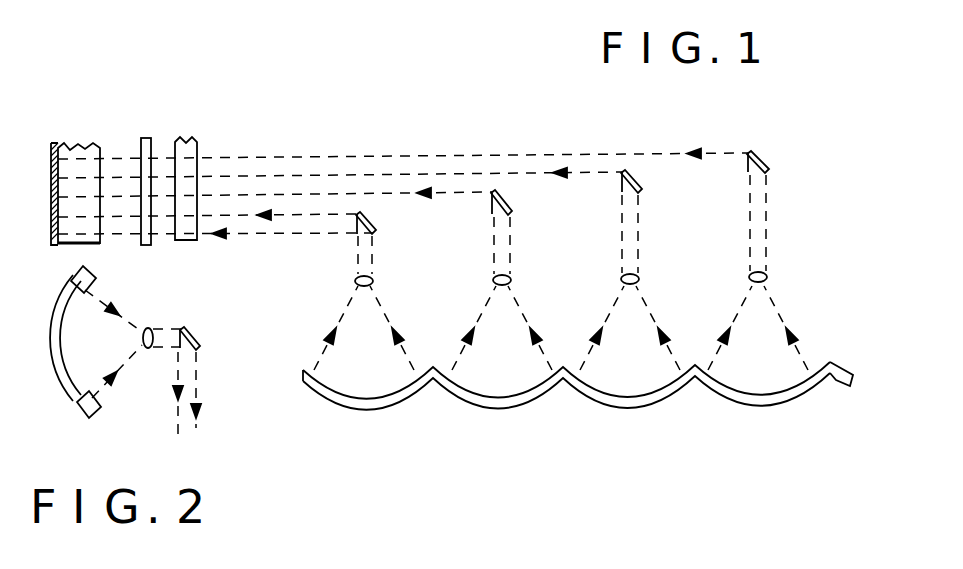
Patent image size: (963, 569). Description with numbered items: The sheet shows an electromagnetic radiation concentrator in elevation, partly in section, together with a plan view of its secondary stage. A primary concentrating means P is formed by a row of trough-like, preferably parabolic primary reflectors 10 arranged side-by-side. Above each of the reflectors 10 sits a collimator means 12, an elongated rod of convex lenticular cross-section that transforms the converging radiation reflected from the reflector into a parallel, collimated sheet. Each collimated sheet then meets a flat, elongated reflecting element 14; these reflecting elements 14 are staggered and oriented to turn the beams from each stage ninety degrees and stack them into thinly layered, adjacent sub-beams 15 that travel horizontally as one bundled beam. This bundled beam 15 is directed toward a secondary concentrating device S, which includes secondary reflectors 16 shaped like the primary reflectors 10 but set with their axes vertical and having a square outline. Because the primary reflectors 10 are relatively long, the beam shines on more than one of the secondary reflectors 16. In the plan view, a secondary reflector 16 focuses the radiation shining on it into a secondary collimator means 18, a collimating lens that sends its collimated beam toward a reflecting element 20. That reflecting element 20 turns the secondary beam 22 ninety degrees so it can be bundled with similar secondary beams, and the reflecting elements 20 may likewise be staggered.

In FIG. 1, the primary reflectors 10 is at (370, 408).
In FIG. 1, the collimator means 12 is at (340, 283).
In FIG. 2, the collimator means 12 is at (148, 338).
In FIG. 1, the reflecting elements 14 is at (376, 228).
In FIG. 2, the reflecting elements 14 is at (176, 338).
In FIG. 1, the sub-beams 15 is at (224, 141).
In FIG. 1, the secondary reflectors 16 is at (52, 212).
In FIG. 2, the secondary reflectors 16 is at (72, 392).
In FIG. 1, the secondary collimator means 18 is at (146, 246).
In FIG. 1, the reflecting element 20 is at (198, 140).
In FIG. 2, the secondary beam 22 is at (198, 441).
In FIG. 1, the primary concentrating means P is at (457, 137).
In FIG. 1, the secondary concentrating device S is at (148, 110).